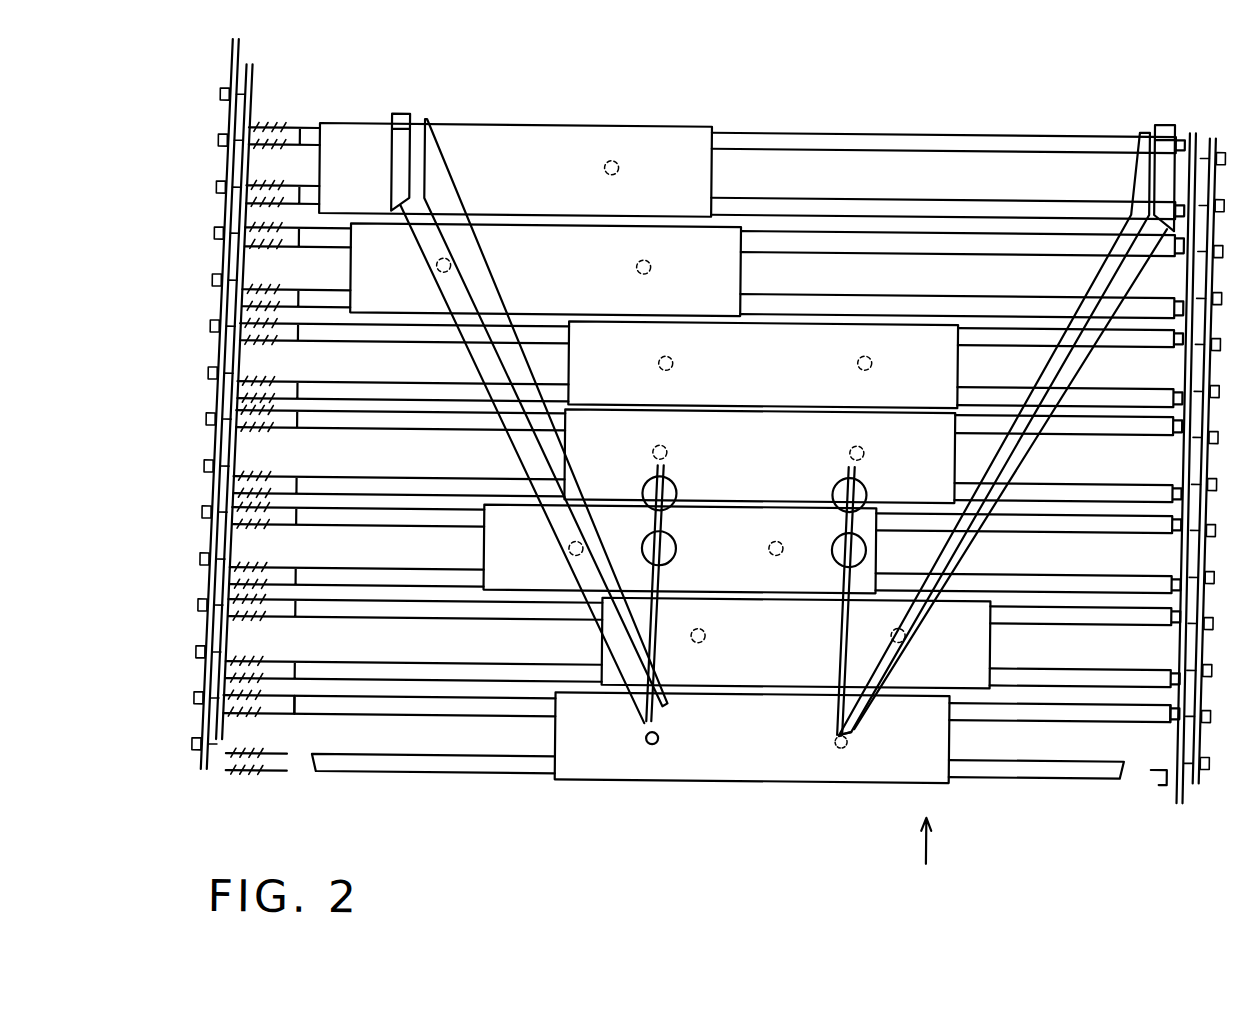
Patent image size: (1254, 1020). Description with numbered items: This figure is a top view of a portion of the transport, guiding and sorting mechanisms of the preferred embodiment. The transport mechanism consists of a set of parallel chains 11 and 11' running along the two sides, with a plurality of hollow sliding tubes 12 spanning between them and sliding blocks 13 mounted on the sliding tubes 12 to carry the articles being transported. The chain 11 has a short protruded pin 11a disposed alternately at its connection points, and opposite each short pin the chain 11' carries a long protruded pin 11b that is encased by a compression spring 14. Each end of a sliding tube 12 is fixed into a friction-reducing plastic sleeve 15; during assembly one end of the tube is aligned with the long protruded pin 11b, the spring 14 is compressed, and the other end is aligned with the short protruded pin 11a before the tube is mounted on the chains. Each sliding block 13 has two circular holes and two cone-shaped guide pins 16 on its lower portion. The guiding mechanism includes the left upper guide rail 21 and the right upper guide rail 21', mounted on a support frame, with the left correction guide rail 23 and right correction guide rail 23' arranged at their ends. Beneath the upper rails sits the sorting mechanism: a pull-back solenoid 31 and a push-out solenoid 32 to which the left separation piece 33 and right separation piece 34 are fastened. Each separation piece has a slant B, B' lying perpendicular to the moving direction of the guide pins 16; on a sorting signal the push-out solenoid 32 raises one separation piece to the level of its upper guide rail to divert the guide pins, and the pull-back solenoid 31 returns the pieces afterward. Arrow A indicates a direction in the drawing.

The parallel chain 11 is at (1201, 505).
The parallel chain 11' is at (218, 440).
The short protruded pin 11a is at (1168, 780).
The long protruded pin 11b is at (295, 774).
The sliding tube 12 is at (340, 773).
The sliding block 13 is at (640, 779).
The compression spring 14 is at (236, 718).
The friction-reducing plastic sleeve 15 is at (1172, 716).
The cone-shaped guide pin 16 is at (848, 745).
The left upper guide rail 21 is at (539, 389).
The right upper guide rail 21' is at (1000, 399).
The left correction guide rail 23 is at (510, 398).
The right correction guide rail 23' is at (1022, 404).
The pull-back electric spiral tube 31 is at (836, 545).
The push-out electric spiral tube 32 is at (836, 490).
The left separation piece 33 is at (668, 580).
The right separation piece 34 is at (852, 585).
The slant B is at (819, 732).
The slant B' is at (676, 702).
The direction of movement A is at (935, 841).